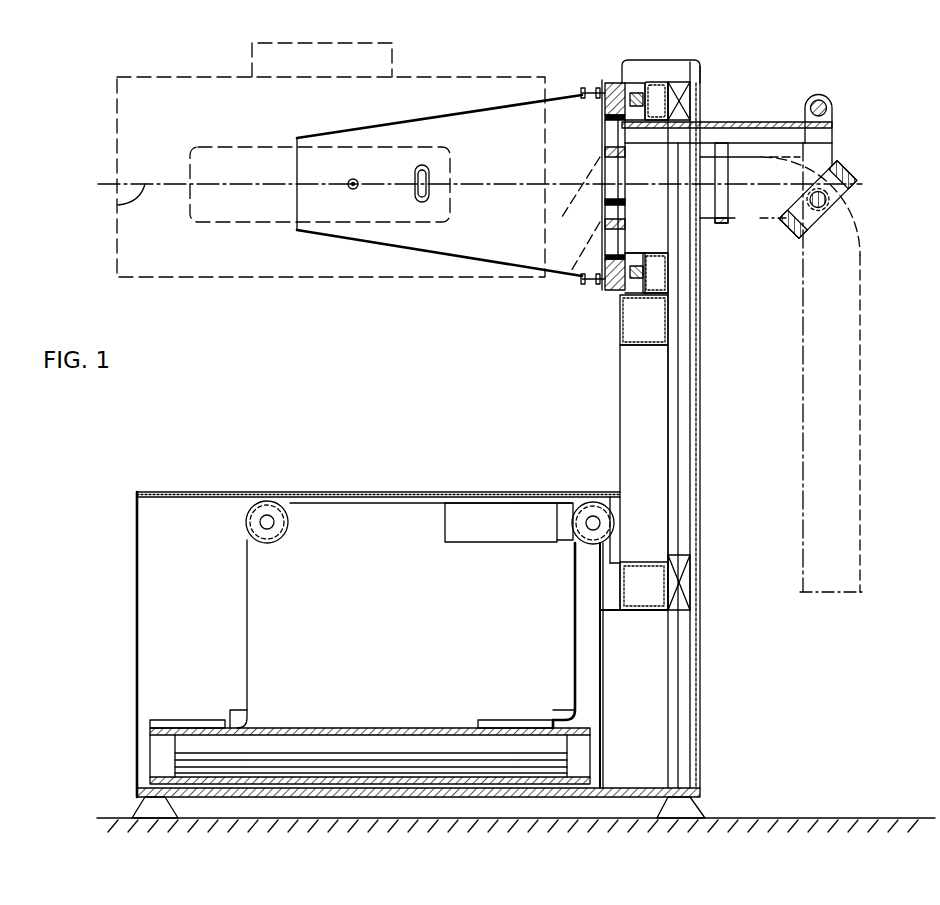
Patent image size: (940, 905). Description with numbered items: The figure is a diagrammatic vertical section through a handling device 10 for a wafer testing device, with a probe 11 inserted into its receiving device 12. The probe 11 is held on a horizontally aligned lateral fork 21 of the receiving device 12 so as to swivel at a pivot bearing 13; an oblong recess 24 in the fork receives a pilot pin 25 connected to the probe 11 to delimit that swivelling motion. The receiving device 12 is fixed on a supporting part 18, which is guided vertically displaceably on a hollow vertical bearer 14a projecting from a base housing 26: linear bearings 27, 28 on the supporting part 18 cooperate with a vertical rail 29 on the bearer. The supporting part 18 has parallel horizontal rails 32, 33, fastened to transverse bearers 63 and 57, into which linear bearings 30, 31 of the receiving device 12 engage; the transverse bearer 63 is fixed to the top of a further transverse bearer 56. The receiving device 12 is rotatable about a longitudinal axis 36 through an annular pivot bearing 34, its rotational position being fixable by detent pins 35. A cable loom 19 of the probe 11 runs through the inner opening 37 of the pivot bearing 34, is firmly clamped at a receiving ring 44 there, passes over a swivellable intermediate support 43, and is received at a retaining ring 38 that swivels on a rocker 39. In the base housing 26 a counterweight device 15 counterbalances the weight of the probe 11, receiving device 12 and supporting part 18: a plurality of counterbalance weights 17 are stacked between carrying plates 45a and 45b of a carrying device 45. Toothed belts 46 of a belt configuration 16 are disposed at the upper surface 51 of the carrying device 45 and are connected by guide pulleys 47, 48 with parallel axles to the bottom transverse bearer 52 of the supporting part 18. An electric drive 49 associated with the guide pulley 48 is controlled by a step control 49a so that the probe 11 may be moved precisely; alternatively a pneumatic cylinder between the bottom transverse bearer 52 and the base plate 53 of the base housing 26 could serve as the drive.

The handling device 10 is at (741, 97).
The probe 11 is at (203, 87).
The receiving device 12 is at (467, 105).
The pivot bearing 13 is at (348, 188).
The vertical bearer 14a is at (702, 416).
The counterweight device 15 is at (385, 520).
The belt configuration 16 is at (566, 607).
The counterbalance weights 17 is at (353, 746).
The supporting part 18 is at (618, 426).
The cable loom 19 is at (557, 217).
The lateral fork 21 is at (472, 259).
The oblong recess 24 is at (421, 205).
The pilot pin 25 is at (428, 182).
The base housing 26 is at (200, 492).
The linear bearing 27 is at (694, 582).
The linear bearing 28 is at (688, 100).
The vertical rail 29 is at (682, 303).
The linear bearing 30 is at (617, 290).
The linear bearing 31 is at (612, 95).
The horizontal rail 32 is at (622, 326).
The horizontal rail 33 is at (636, 98).
The pivot bearing 34 is at (608, 225).
The detent pins 35 is at (582, 281).
The longitudinal axis 36 is at (118, 206).
The inner opening 37 is at (697, 234).
The retaining ring 38 is at (848, 168).
The rocker 39 is at (845, 135).
The intermediate support 43 is at (722, 172).
The receiving ring 44 is at (605, 152).
The carrying device 45 is at (443, 720).
The carrying plate 45a is at (326, 727).
The carrying plate 45b is at (148, 780).
The toothed belts 46 is at (249, 630).
The guide pulley 47 is at (266, 505).
The guide pulley 48 is at (592, 506).
The electric drive 49 is at (481, 530).
The step control 49a is at (458, 520).
The upper surface 51 is at (283, 728).
The bottom transverse bearer 52 is at (637, 612).
The base plate 53 is at (655, 790).
The transverse bearer 56 is at (648, 346).
The transverse bearer 57 is at (660, 82).
The transverse bearer 63 is at (670, 268).